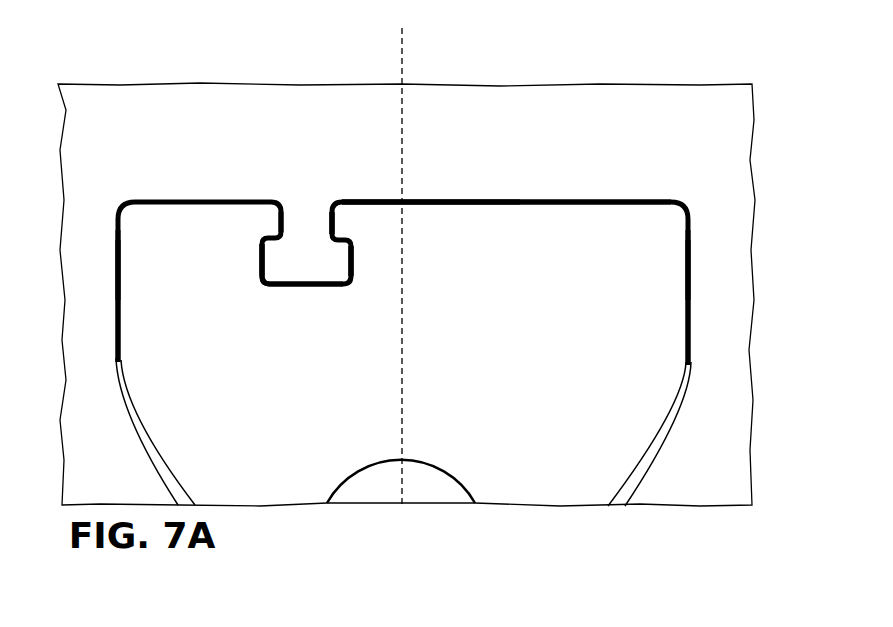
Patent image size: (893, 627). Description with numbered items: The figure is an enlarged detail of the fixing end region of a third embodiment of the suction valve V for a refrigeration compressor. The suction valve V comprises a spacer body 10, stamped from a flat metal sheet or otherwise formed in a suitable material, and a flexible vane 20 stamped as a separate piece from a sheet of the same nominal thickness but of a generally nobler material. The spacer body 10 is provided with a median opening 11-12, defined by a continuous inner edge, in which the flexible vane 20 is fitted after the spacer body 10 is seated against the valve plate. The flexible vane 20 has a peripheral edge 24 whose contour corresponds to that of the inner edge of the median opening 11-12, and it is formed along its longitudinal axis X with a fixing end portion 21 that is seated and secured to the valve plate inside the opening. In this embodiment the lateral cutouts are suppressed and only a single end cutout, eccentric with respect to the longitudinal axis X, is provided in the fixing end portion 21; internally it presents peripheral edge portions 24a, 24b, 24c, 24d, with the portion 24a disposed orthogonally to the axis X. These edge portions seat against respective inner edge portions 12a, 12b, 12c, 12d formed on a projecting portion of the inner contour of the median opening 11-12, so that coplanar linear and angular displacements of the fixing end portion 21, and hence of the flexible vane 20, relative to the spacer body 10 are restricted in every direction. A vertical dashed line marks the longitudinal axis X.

The spacer body 10 is at (107, 120).
The median opening and continuous inner edge 11-12 is at (173, 465).
The inner edge portion 12a is at (542, 206).
The inner edge portion 12b is at (275, 225).
The inner edge portion 12c is at (340, 212).
The inner edge portion 12d is at (269, 212).
The flexible vane 20 is at (430, 250).
The fixing end portion 21 is at (600, 248).
The peripheral edge 24 is at (642, 482).
The peripheral edge portion 24a is at (517, 201).
The peripheral edge portion 24b is at (260, 253).
The peripheral edge portion 24c is at (330, 222).
The peripheral edge portion 24d is at (284, 214).
The suction valve V is at (203, 84).
The longitudinal axis X is at (403, 115).